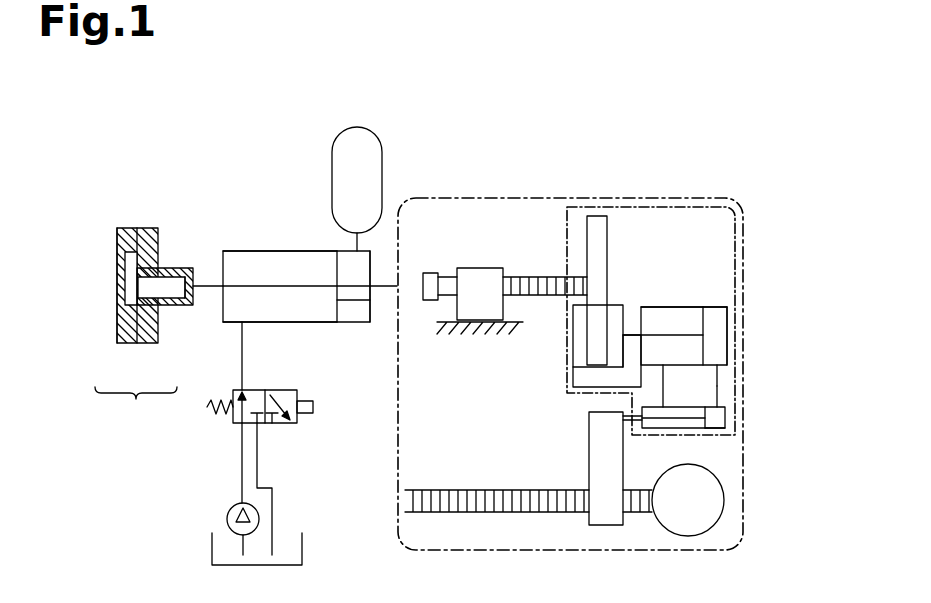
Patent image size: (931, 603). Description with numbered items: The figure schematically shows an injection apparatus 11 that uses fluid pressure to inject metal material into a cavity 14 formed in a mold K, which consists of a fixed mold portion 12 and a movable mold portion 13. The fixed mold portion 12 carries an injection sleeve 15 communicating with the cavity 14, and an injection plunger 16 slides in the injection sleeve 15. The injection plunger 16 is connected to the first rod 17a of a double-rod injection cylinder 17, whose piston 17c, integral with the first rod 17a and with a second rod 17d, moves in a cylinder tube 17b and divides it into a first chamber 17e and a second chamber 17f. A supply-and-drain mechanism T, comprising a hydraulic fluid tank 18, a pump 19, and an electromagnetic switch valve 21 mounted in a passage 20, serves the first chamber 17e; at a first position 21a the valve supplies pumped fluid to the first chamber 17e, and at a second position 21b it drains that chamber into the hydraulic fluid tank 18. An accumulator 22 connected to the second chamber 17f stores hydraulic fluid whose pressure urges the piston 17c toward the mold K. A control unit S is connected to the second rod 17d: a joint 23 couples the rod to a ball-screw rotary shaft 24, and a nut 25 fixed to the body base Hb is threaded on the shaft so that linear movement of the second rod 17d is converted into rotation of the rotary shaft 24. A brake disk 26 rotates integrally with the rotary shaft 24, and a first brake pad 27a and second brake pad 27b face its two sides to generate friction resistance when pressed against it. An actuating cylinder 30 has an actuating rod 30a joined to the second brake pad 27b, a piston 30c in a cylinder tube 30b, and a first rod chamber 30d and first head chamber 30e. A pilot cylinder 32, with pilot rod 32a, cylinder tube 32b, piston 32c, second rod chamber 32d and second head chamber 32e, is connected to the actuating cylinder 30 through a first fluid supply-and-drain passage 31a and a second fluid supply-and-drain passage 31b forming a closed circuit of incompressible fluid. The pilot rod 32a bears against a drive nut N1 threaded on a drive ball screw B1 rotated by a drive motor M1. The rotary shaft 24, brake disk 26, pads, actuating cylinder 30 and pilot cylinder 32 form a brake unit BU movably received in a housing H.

The injection apparatus 11 is at (420, 126).
The fixed mold portion 12 is at (150, 345).
The movable mold portion 13 is at (128, 345).
The cavity 14 is at (128, 270).
The injection sleeve 15 is at (165, 268).
The injection plunger 16 is at (195, 275).
The injection cylinder 17 is at (290, 252).
The first rod 17a is at (206, 288).
The cylinder tube 17b is at (258, 322).
The piston 17c is at (333, 320).
The second rod 17d is at (347, 310).
The first chamber 17e is at (238, 252).
The second chamber 17f is at (347, 328).
The hydraulic fluid tank 18 is at (302, 548).
The pump 19 is at (227, 518).
The passage 20 is at (257, 460).
The electromagnetic switch valve 21 is at (234, 425).
The first position 21a is at (240, 390).
The second position 21b is at (298, 420).
The accumulator 22 is at (370, 128).
The joint 23 is at (428, 300).
The rotary shaft 24 is at (530, 278).
The nut 25 is at (480, 268).
The brake disk 26 is at (608, 232).
The first brake pad 27a is at (575, 350).
The second brake pad 27b is at (590, 370).
The actuating cylinder 30 is at (728, 320).
The actuating rod 30a is at (636, 333).
The cylinder tube 30b is at (727, 310).
The piston 30c is at (702, 313).
The first rod chamber 30d is at (670, 312).
The first head chamber 30e is at (725, 345).
The first fluid supply-and-drain passage 31a is at (717, 375).
The second fluid supply-and-drain passage 31b is at (717, 395).
The pilot cylinder 32 is at (725, 415).
The pilot rod 32a is at (628, 414).
The cylinder tube 32b is at (626, 422).
The piston 32c is at (712, 428).
The second rod chamber 32d is at (660, 428).
The second head chamber 32e is at (720, 426).
The drive ball screw B1 is at (480, 512).
The drive nut N1 is at (605, 525).
The drive motor M1 is at (688, 536).
The housing H is at (500, 198).
The body base Hb is at (448, 335).
The control unit S is at (746, 196).
The brake unit BU is at (737, 228).
The mold K is at (136, 411).
The supply-and-drain mechanism T is at (282, 455).